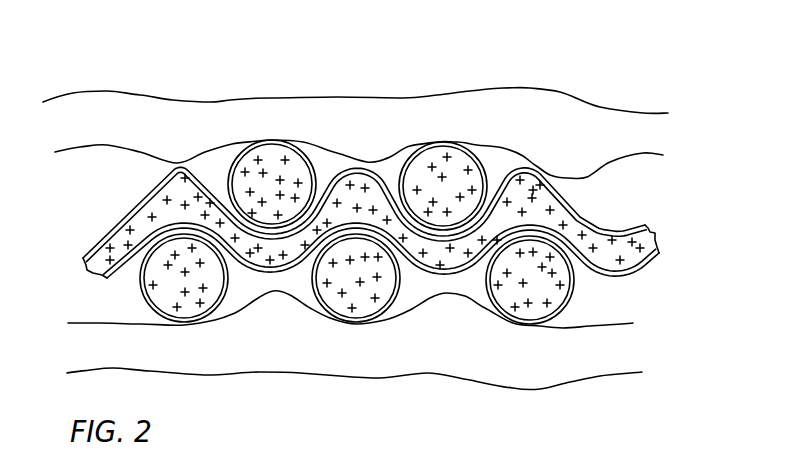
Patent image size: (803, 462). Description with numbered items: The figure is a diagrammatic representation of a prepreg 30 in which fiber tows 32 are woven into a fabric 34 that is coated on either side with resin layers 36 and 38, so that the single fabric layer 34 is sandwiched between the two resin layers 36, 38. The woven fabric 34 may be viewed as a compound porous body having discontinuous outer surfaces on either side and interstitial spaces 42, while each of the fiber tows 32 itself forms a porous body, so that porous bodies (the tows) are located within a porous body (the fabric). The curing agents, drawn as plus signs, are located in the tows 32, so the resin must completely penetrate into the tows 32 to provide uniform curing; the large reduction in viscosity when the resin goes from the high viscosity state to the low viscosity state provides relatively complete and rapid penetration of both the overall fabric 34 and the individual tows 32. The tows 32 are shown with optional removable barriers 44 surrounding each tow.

The prepreg 30 is at (582, 65).
The fiber tows 32 is at (273, 153).
The fabric 34 is at (100, 203).
The resin layer 36 is at (223, 117).
The resin layer 38 is at (500, 372).
The interstitial spaces 42 is at (213, 158).
The removable barriers 44 is at (305, 157).